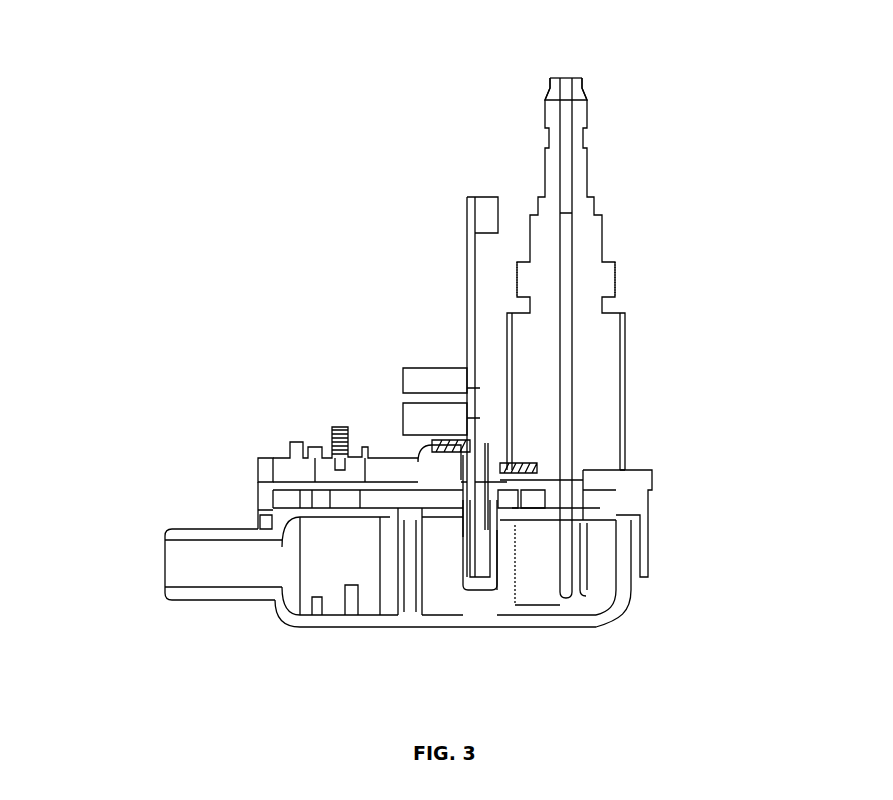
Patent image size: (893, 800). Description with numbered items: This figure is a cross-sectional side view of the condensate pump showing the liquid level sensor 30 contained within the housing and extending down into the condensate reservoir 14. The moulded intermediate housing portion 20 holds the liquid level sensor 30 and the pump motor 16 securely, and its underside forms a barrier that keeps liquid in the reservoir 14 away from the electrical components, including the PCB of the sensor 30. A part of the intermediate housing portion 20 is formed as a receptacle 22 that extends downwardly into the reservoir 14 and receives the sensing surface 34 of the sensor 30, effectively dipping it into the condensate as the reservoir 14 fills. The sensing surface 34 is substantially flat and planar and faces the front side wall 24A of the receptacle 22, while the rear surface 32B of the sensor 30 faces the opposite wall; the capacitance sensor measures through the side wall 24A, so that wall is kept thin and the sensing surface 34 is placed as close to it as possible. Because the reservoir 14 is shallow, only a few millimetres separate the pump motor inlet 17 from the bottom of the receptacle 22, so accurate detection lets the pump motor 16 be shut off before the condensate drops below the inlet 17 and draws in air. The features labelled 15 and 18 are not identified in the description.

The condensate reservoir 14 is at (622, 610).
The inlet port 15 is at (152, 567).
The pump motor 16 is at (630, 307).
The pump motor inlet 17 is at (575, 603).
The nozzle tip 18 is at (569, 77).
The intermediate housing portion 20 is at (653, 490).
The receptacle 22 is at (492, 596).
The side wall 24A is at (463, 537).
The liquid level sensor 30 is at (453, 220).
The rear surface 32B is at (472, 267).
The sensing surface 34 is at (462, 557).